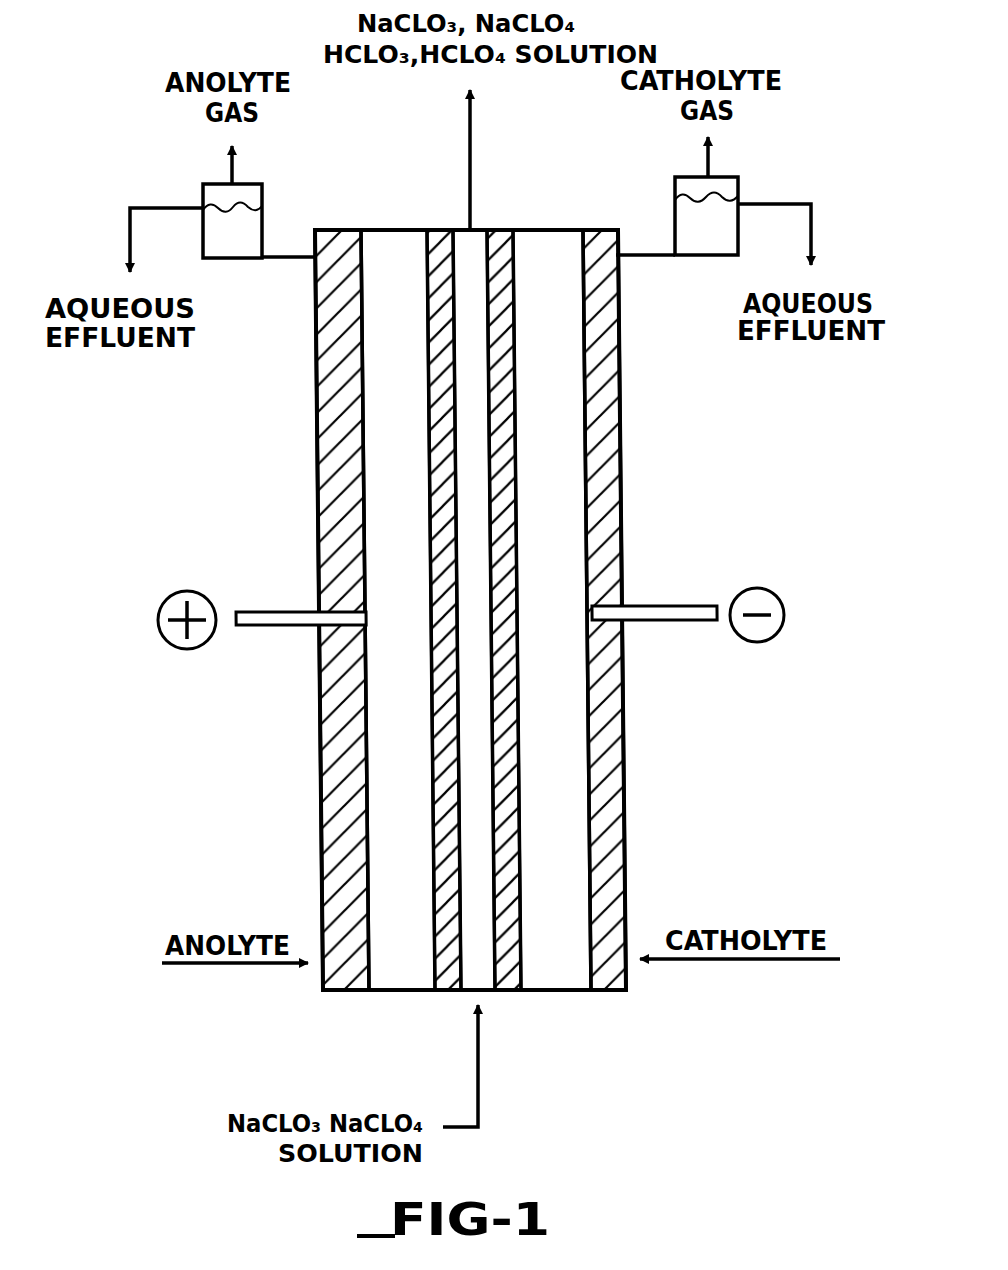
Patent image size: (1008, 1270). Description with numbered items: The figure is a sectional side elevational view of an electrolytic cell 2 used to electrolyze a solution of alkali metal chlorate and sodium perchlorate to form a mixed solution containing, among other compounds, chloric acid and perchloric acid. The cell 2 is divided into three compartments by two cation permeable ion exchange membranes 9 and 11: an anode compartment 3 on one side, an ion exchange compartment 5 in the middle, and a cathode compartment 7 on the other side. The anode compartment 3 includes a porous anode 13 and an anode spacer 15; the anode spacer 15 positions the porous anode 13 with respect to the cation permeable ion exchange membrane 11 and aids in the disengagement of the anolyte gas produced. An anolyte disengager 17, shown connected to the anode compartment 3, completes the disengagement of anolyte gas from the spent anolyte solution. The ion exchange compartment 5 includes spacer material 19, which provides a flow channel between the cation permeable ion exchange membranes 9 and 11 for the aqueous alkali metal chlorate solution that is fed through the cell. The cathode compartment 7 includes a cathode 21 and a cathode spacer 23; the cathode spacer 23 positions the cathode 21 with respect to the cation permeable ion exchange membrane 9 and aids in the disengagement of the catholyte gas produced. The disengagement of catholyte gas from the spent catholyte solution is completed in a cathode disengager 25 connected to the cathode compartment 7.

The electrolytic cell 2 is at (477, 619).
The anode compartment 3 is at (410, 982).
The ion exchange compartment 5 is at (480, 671).
The cathode compartment 7 is at (555, 243).
The cation permeable ion exchange membrane 9 is at (510, 984).
The cation permeable ion exchange membrane 11 is at (442, 228).
The anode 13 is at (309, 578).
The anode spacer 15 is at (318, 482).
The anolyte disengager 17 is at (240, 250).
The spacer material 19 is at (478, 235).
The cathode 21 is at (595, 1000).
The cathode spacer 23 is at (654, 652).
The cathode disengager 25 is at (703, 245).